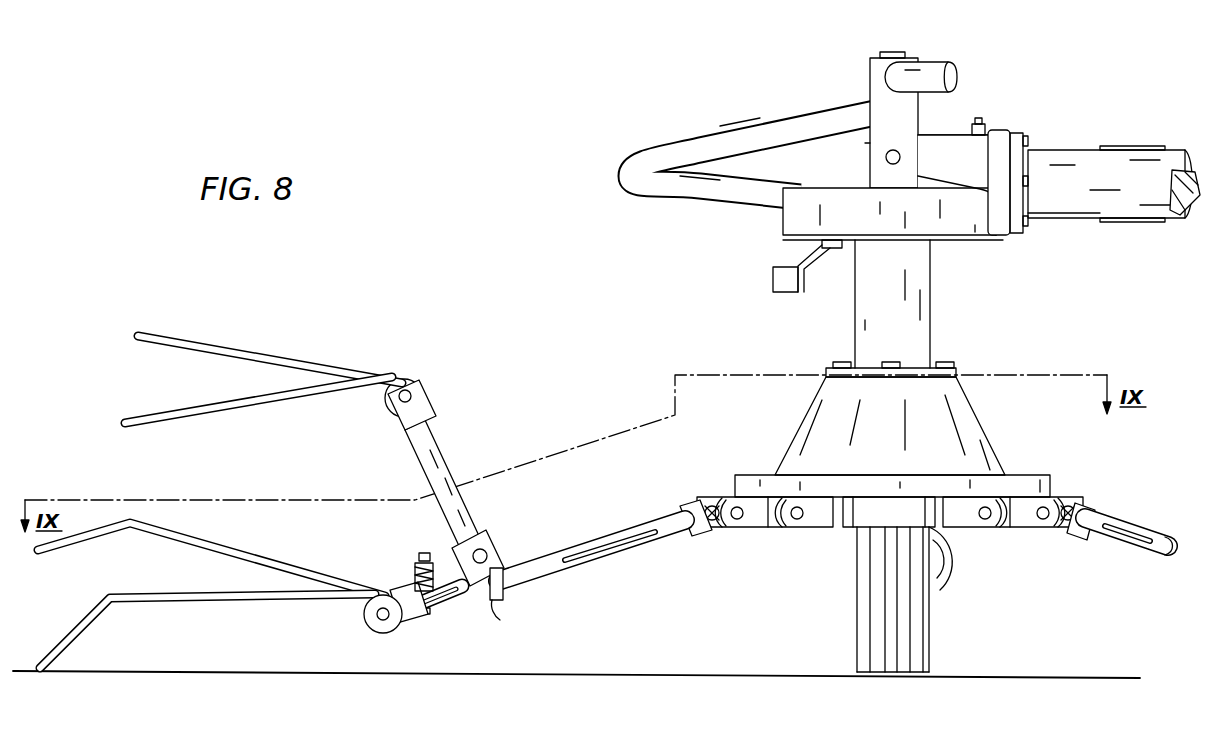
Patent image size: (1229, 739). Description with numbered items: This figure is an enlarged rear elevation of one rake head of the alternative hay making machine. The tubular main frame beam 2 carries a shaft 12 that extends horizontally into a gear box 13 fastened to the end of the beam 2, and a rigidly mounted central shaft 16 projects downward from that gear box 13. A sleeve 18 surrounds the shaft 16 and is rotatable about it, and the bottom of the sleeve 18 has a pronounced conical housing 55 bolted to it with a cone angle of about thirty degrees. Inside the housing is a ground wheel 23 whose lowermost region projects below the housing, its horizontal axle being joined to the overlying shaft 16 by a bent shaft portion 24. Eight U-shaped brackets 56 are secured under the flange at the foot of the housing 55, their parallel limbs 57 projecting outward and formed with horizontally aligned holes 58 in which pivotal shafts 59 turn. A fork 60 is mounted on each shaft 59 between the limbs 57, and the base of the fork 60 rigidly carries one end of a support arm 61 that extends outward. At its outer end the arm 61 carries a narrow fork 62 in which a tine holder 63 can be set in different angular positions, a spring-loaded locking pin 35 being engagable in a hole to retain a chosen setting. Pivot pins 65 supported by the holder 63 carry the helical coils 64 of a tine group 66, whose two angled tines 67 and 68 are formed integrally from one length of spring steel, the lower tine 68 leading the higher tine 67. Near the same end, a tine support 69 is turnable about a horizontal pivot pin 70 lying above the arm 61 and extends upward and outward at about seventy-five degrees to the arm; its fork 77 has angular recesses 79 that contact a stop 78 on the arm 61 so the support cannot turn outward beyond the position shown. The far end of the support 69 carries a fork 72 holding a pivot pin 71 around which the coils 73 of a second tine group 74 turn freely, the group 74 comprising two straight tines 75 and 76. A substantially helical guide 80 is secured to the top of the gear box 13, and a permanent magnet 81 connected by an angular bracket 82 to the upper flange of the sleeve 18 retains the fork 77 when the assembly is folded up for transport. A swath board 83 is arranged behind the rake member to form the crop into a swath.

The main frame beam 2 is at (1082, 152).
The shaft 12 is at (1185, 200).
The gear box 13 is at (857, 175).
The central shaft 16 is at (890, 58).
The sleeve 18 is at (933, 300).
The ground wheel 23 is at (857, 636).
The bent shaft portion 24 is at (962, 575).
The spring-loaded locking pin 35 is at (418, 564).
The housing 55 is at (985, 425).
The U-shaped bracket 56 is at (810, 528).
The limb 57 is at (930, 505).
The hole 58 is at (738, 520).
The pivotal shaft 59 is at (710, 523).
The fork 60 is at (690, 512).
The support arm 61 is at (603, 556).
The narrow fork 62 is at (456, 600).
The tine holder 63 is at (412, 625).
The helical coil 64 is at (366, 620).
The pivot pin 65 is at (381, 622).
The tine group 66 is at (211, 595).
The tine 67 is at (182, 538).
The tine 68 is at (126, 603).
The tine support 69 is at (455, 468).
The pivot pin 70 is at (490, 532).
The pivot pin 71 is at (412, 392).
The fork 72 is at (408, 432).
The helical coil 73 is at (388, 410).
The tine group 74 is at (263, 392).
The tine 75 is at (186, 344).
The tine 76 is at (164, 420).
The fork 77 is at (498, 566).
The stop 78 is at (505, 598).
The angular recess 79 is at (500, 606).
The helical guide 80 is at (642, 153).
The permanent magnet 81 is at (768, 284).
The angular bracket 82 is at (808, 252).
The swath board 83 is at (960, 77).